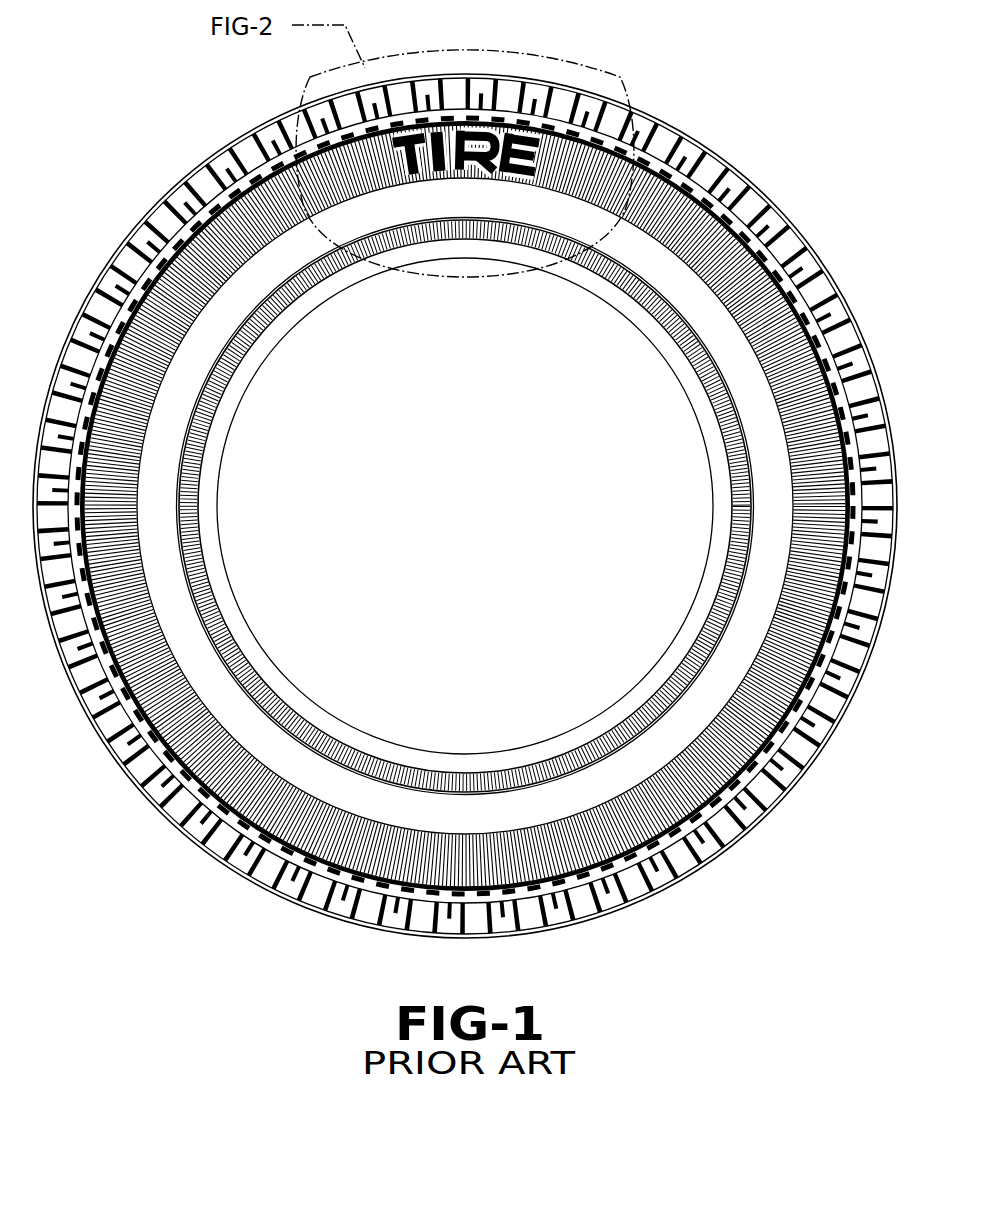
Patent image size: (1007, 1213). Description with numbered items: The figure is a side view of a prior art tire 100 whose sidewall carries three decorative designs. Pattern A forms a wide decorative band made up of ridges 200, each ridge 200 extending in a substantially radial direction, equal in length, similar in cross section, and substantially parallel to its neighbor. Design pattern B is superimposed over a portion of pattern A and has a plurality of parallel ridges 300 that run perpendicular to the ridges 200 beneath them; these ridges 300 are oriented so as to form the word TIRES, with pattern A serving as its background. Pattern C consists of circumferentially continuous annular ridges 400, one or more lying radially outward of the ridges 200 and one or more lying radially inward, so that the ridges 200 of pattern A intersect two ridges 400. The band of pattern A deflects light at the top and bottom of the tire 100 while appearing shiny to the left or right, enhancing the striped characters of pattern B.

The prior tire 100 is at (197, 852).
The ridges 200 is at (123, 475).
The ridges 300 is at (388, 145).
The ridges 400 is at (82, 543).
The pattern A is at (238, 247).
The design pattern B is at (528, 142).
The pattern C is at (700, 262).